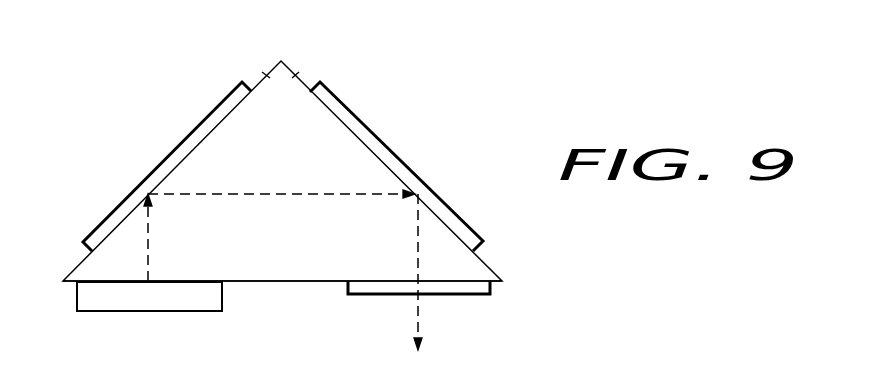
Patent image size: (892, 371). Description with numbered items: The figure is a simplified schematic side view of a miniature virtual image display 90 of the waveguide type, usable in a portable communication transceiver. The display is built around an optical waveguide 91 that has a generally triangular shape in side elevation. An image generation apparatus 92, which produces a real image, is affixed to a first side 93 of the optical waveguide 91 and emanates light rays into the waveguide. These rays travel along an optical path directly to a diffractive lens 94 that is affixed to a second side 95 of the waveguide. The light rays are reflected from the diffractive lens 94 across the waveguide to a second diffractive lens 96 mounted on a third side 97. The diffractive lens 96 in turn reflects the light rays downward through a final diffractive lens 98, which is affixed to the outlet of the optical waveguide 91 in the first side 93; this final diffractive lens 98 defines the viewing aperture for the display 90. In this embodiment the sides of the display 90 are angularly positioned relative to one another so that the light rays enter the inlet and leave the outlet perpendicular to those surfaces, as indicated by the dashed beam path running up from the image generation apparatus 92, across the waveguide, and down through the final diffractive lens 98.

The miniature virtual image display 90 is at (617, 233).
The optical waveguide 91 is at (296, 153).
The image generation apparatus 92 is at (147, 312).
The first side 93 is at (282, 283).
The diffractive lens 94 is at (163, 158).
The second side 95 is at (268, 73).
The diffractive lens 96 is at (402, 158).
The third side 97 is at (297, 74).
The final diffractive lens 98 is at (375, 297).